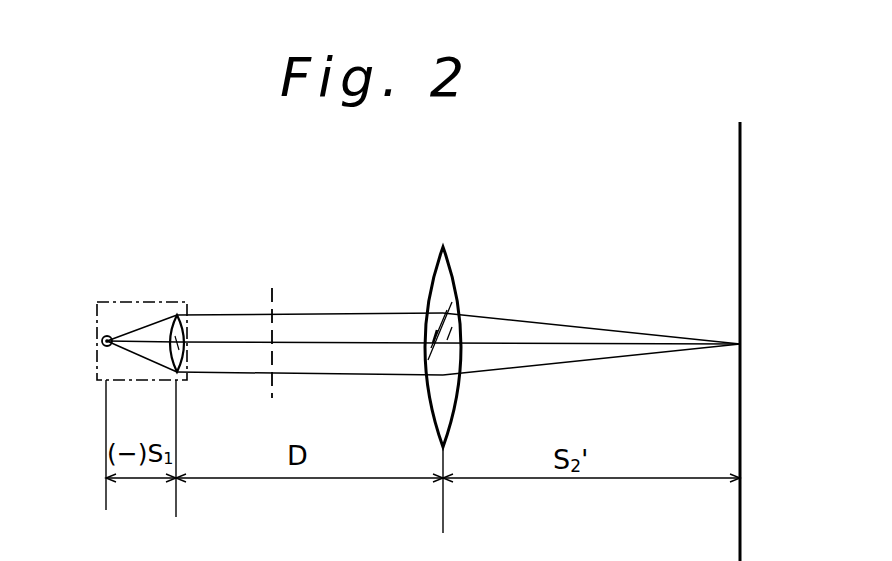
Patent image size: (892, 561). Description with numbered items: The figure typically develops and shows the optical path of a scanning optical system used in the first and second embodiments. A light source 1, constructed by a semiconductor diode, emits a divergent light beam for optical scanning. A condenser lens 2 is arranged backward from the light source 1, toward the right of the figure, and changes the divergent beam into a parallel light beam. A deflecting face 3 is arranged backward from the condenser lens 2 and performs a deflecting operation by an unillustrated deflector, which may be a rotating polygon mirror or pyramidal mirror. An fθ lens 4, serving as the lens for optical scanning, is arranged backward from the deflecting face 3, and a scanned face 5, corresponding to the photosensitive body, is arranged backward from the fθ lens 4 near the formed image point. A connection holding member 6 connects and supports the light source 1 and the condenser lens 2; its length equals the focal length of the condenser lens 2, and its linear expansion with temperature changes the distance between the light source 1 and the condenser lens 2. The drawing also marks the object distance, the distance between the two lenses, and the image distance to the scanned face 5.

The light source 1 is at (108, 335).
The condenser lens 2 is at (178, 312).
The deflecting face 3 is at (274, 297).
The fθ lens 4 is at (453, 290).
The scanned face 5 is at (742, 244).
The connection holding member 6 is at (157, 300).